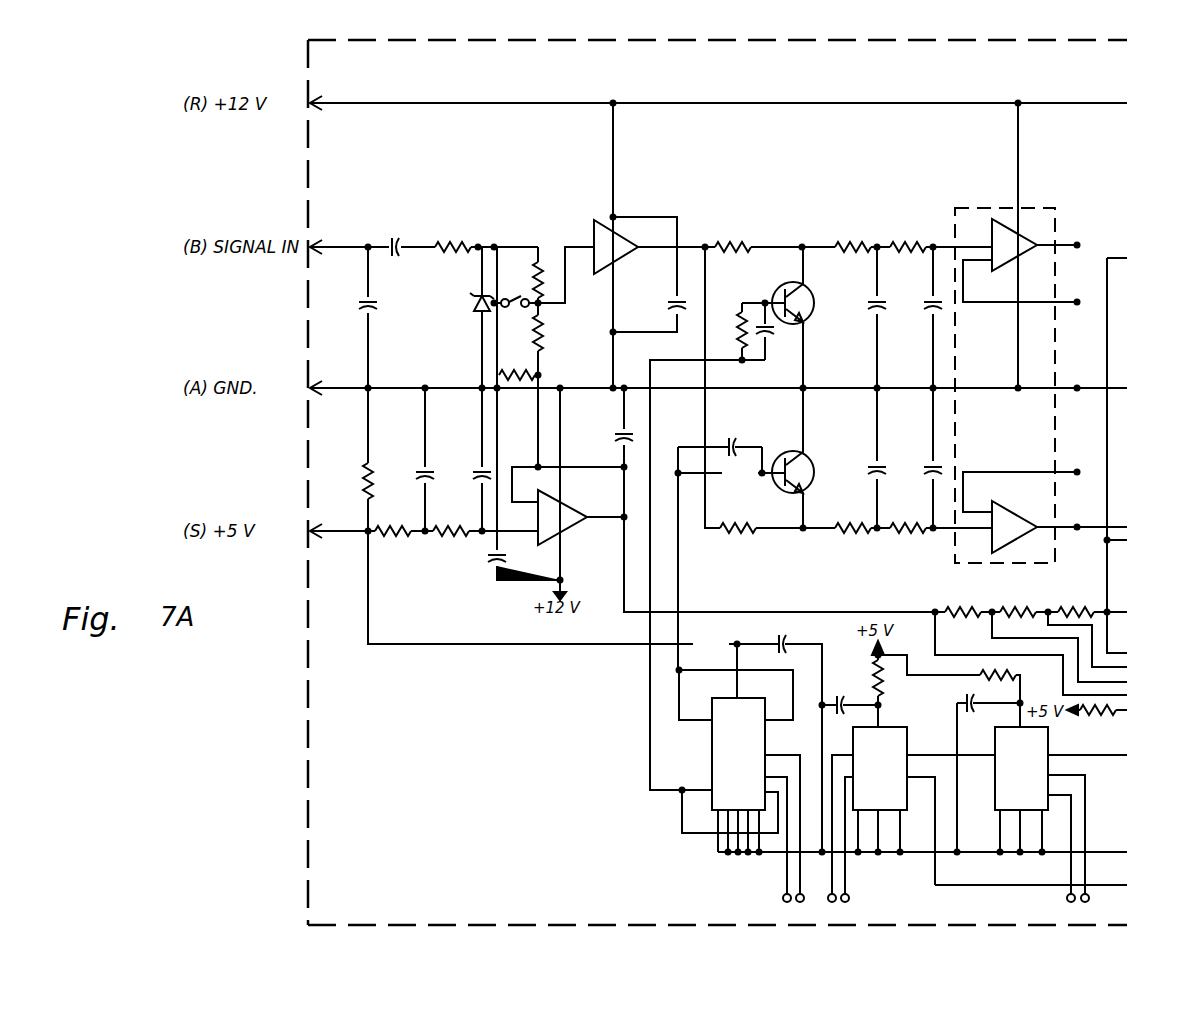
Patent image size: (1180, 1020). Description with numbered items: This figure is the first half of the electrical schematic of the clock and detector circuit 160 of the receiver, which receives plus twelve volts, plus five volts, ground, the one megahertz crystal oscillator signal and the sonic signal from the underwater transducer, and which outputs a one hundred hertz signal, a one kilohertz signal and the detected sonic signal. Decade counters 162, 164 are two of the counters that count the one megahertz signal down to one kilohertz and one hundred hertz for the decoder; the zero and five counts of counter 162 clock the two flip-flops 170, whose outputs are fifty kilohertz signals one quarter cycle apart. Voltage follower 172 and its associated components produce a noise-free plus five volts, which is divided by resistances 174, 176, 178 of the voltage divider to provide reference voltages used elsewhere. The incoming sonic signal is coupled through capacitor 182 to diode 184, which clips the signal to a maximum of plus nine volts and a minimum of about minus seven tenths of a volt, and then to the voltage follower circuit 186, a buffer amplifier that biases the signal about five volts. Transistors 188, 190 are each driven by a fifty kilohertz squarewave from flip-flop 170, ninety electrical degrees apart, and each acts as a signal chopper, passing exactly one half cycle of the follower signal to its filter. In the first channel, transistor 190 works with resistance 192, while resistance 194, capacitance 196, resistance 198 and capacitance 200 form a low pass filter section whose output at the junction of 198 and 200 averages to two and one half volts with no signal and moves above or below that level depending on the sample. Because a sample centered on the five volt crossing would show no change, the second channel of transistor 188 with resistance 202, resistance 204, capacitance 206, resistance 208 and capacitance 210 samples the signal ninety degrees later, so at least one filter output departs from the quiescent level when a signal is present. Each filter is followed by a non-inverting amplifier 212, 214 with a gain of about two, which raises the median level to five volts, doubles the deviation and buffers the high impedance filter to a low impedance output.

The clock and detector circuit 160 is at (1082, 88).
The decade counter 162 is at (869, 777).
The decade counter 164 is at (1010, 777).
The flip-flops 170 is at (727, 764).
The voltage follower 172 is at (570, 510).
The resistance 174 is at (962, 606).
The resistance 176 is at (1018, 606).
The resistance 178 is at (1076, 606).
The capacitor 182 is at (398, 236).
The diode 184 is at (470, 300).
The voltage follower circuit 186 is at (597, 270).
The transistor 188 is at (812, 455).
The transistor 190 is at (810, 320).
The resistance 192 is at (738, 240).
The resistance 194 is at (840, 240).
The capacitance 196 is at (868, 308).
The resistance 198 is at (903, 240).
The capacitance 200 is at (924, 314).
The resistance 202 is at (740, 536).
The resistance 204 is at (852, 536).
The capacitance 206 is at (868, 470).
The resistance 208 is at (906, 536).
The capacitance 210 is at (925, 468).
The non-inverting amplifier 212 is at (1005, 234).
The non-inverting amplifier 214 is at (1018, 548).